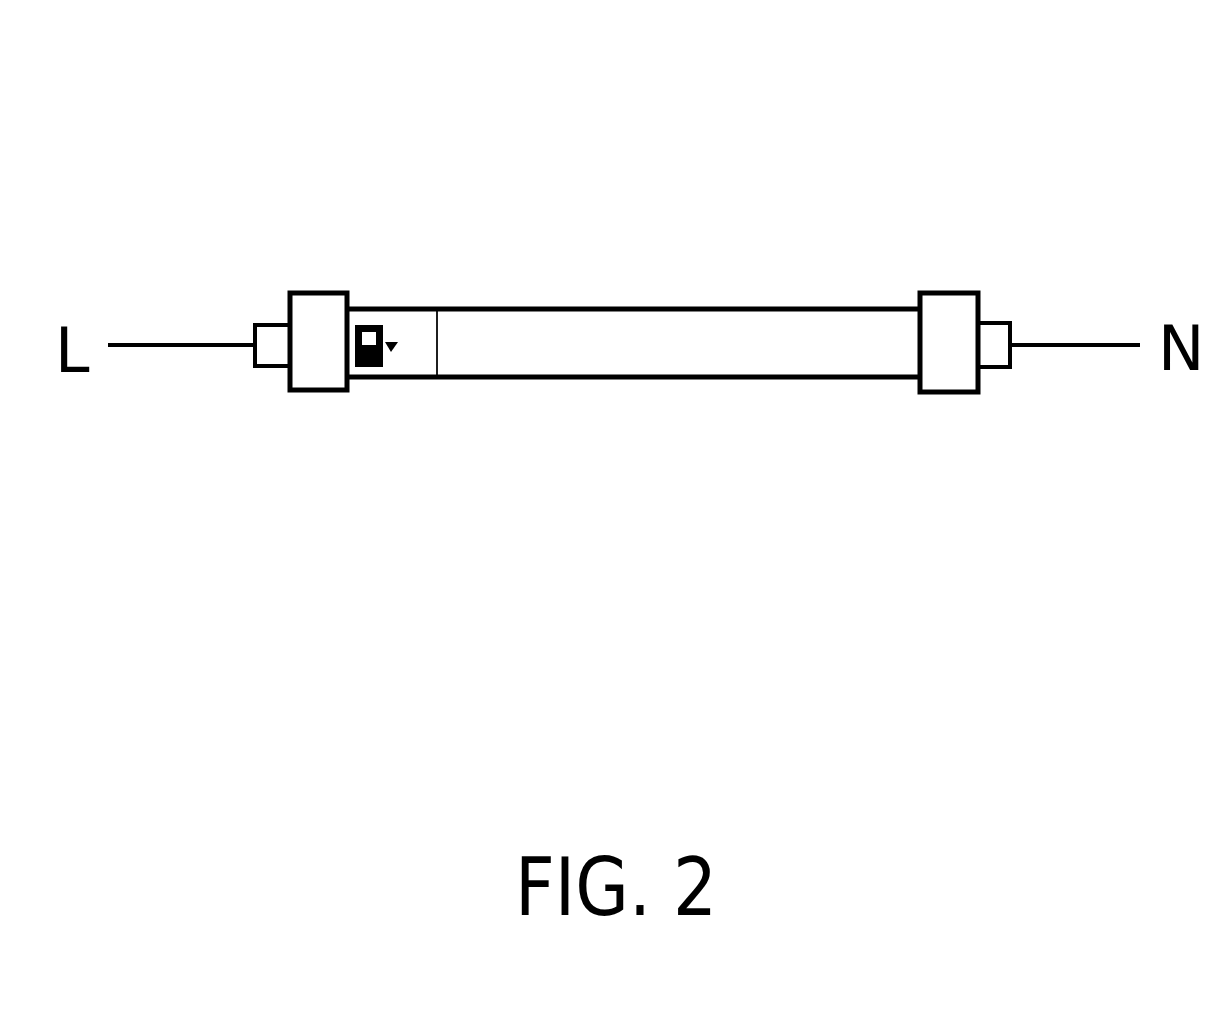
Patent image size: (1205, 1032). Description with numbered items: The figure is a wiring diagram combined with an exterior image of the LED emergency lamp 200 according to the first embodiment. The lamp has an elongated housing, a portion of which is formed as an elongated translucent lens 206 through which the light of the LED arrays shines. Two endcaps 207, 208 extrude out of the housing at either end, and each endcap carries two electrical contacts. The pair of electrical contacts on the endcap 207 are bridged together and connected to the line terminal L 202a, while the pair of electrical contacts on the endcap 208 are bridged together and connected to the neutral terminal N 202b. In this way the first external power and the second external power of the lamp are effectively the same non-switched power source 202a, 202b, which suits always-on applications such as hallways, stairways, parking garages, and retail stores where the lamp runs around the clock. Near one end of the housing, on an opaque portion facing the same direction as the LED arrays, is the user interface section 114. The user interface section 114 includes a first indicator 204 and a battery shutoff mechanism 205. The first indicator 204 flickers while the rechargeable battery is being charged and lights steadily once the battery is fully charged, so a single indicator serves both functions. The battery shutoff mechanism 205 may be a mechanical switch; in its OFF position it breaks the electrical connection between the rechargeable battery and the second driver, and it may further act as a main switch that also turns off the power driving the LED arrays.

The LED tube lamp 200 is at (609, 290).
The L 202a is at (175, 345).
The N 202b is at (1053, 347).
The first indicator 204 is at (392, 347).
The battery shutoff mechanism 205 is at (373, 370).
The elongated translucent lens 206 is at (698, 307).
The endcap 207 is at (273, 323).
The endcap 208 is at (995, 322).
The user interface section 114 is at (425, 350).